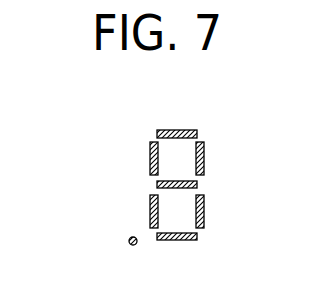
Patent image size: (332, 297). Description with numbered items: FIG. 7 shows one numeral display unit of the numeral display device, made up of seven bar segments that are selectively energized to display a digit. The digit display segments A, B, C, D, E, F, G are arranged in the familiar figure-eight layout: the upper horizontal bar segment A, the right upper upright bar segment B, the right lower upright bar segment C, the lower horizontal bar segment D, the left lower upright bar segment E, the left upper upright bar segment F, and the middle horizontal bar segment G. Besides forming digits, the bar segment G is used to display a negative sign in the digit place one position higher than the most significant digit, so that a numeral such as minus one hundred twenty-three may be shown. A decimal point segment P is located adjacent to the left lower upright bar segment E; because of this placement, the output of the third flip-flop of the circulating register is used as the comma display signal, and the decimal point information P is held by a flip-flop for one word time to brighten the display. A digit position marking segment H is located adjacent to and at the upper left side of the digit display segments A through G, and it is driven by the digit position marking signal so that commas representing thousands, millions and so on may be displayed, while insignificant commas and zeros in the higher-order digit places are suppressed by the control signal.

The digit display segment A is at (188, 130).
The digit display segment B is at (204, 159).
The digit display segment C is at (205, 213).
The digit display segment D is at (173, 241).
The digit display segment E is at (149, 209).
The digit display segment F is at (149, 163).
The bar segment G is at (198, 185).
The decimal point segment P is at (129, 243).
The digit position marking segment H is at (126, 128).